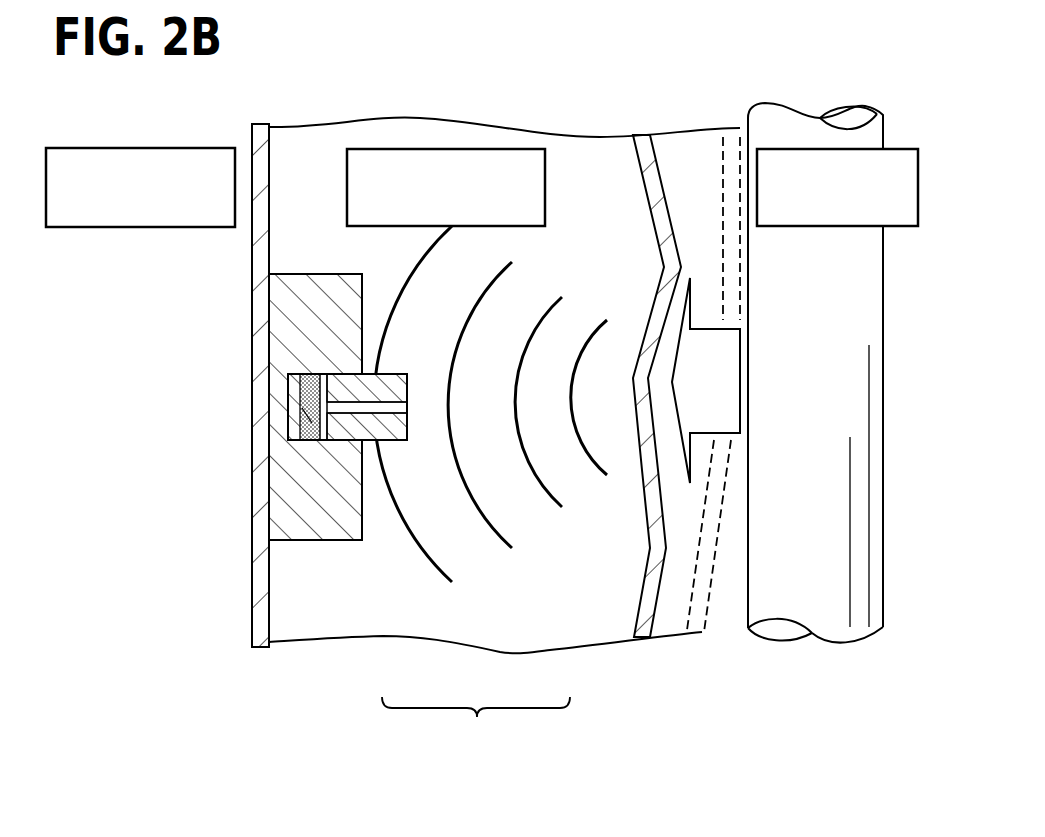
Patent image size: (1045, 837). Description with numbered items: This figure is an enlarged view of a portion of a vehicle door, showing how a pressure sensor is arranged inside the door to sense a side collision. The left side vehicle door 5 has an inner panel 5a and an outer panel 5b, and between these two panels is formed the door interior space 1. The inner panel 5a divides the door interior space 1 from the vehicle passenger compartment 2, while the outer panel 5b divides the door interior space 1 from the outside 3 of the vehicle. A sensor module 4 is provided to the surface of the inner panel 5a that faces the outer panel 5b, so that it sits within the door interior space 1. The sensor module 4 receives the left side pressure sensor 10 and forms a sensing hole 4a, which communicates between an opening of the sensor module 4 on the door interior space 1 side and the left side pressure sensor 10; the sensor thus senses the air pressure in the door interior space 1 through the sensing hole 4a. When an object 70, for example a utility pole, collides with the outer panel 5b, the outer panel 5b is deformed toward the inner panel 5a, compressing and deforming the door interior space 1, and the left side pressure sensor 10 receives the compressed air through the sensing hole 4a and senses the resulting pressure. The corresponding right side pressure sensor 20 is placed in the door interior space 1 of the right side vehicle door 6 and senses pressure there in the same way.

The door interior space 1 is at (446, 187).
The vehicle passenger compartment 2 is at (140, 187).
The outside 3 is at (837, 187).
The sensor module 4 is at (301, 268).
The sensing hole 4a is at (357, 410).
The left side vehicle door 5 is at (476, 726).
The right side vehicle door 6 is at (476, 707).
The inner panel 5a is at (269, 615).
The outer panel 5b is at (694, 607).
The left side pressure sensor 10 is at (230, 407).
The right side pressure sensor 20 is at (305, 403).
The object 70 is at (883, 497).